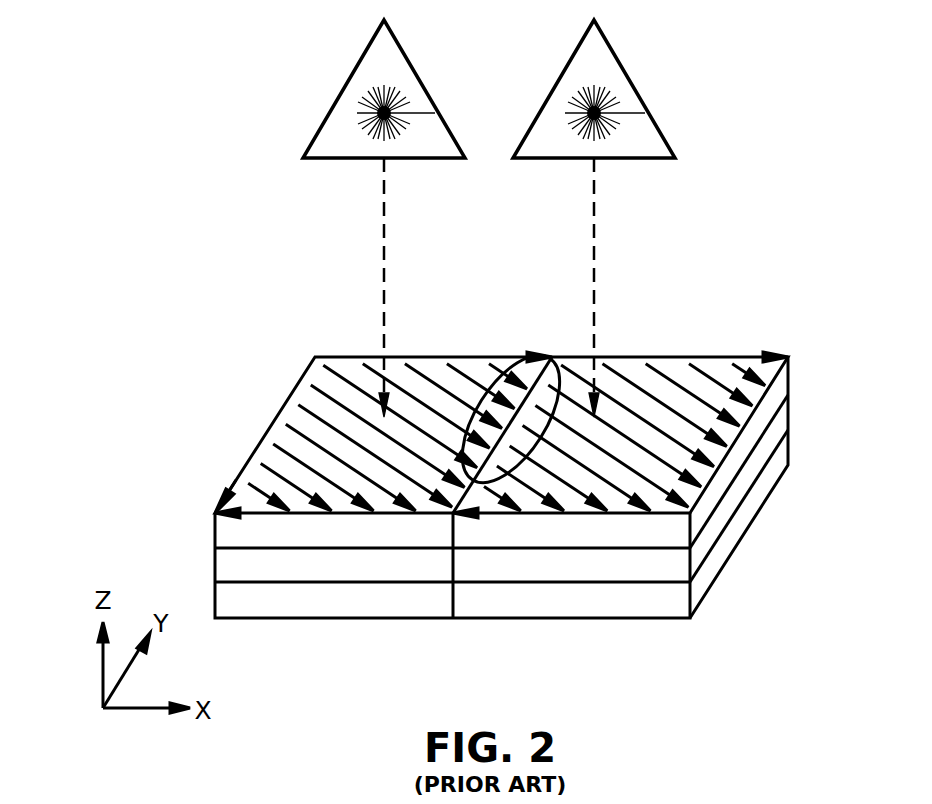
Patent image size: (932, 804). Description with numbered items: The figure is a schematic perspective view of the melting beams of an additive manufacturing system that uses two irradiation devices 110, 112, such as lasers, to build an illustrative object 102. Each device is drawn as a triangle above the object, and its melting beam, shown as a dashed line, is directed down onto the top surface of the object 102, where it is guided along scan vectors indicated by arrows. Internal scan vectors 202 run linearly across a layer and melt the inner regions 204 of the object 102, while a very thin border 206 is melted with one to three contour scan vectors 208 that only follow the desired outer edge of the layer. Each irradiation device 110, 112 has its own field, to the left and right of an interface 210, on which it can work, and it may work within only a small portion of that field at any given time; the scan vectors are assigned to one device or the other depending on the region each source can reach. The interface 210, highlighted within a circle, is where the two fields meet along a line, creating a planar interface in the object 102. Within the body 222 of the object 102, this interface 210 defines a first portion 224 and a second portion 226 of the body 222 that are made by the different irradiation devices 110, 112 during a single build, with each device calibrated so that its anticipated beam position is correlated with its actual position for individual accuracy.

The object 102 is at (830, 347).
The irradiation device 110 is at (345, 90).
The irradiation device 112 is at (637, 87).
The internal scan vectors 202 is at (455, 373).
The inner regions 204 is at (348, 437).
The border 206 is at (353, 368).
The contour scan vectors 208 is at (500, 357).
The interface 210 is at (557, 387).
The body 222 is at (452, 568).
The first portion 224 is at (343, 503).
The second portion 226 is at (578, 503).